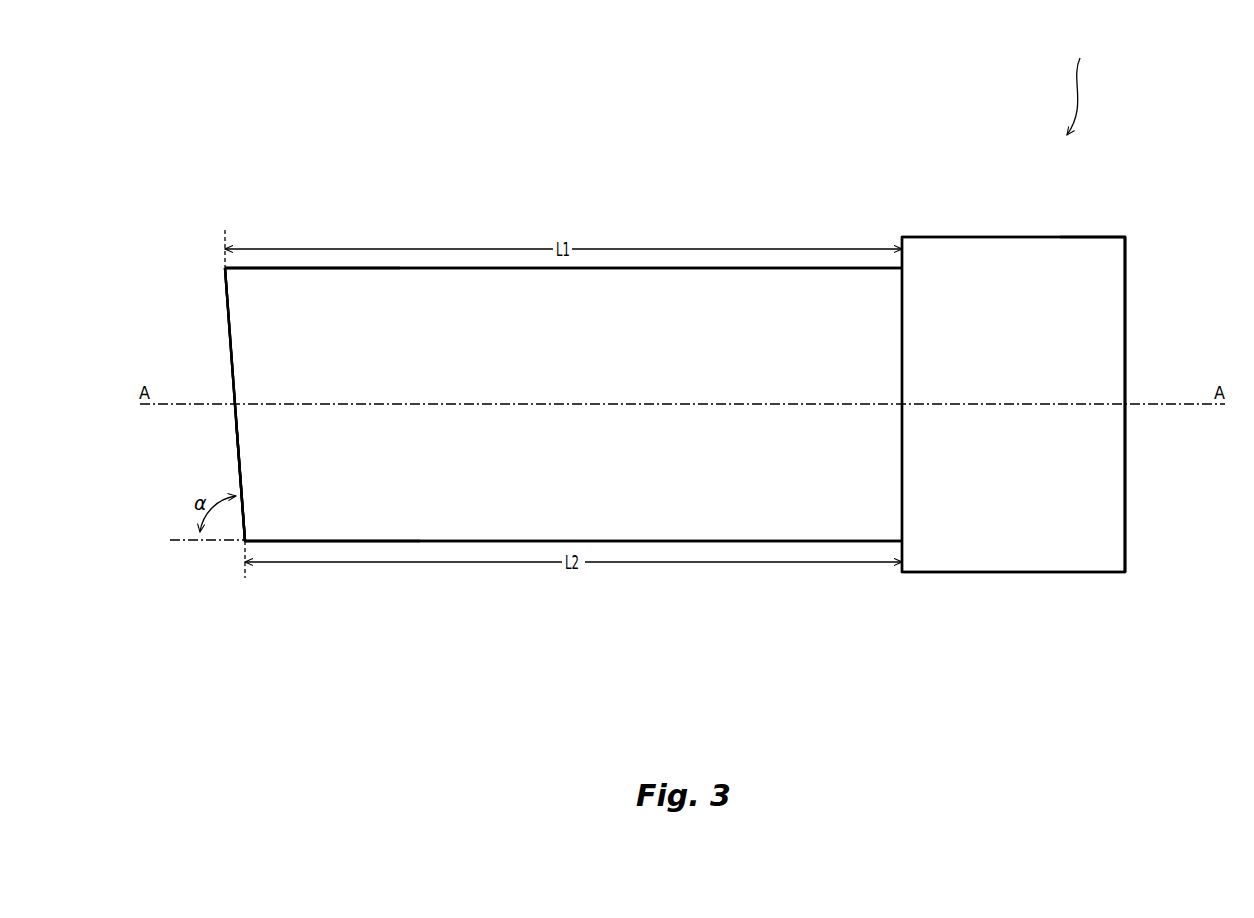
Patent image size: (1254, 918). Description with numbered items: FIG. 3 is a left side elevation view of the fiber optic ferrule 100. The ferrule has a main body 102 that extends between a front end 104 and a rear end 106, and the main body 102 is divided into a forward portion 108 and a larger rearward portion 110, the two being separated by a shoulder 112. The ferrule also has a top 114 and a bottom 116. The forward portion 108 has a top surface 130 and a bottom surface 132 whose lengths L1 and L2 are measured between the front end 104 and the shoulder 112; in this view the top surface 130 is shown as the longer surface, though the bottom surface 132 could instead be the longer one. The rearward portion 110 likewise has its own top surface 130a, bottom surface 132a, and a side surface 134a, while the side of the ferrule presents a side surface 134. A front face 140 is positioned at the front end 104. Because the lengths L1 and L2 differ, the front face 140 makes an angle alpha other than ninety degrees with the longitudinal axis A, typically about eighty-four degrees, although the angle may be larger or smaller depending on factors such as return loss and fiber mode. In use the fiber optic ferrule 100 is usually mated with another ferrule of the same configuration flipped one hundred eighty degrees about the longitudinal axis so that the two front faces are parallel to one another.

The fiber optic ferrule 100 is at (1083, 84).
The main body 102 is at (718, 578).
The front end 104 is at (208, 360).
The rear end 106 is at (1138, 292).
The forward portion 108 is at (203, 302).
The rearward portion 110 is at (1093, 237).
The shoulder 112 is at (970, 514).
The top 114 is at (362, 265).
The bottom 116 is at (363, 542).
The top surface 130 is at (437, 267).
The top surface of rearward portion 130a is at (1022, 237).
The bottom surface 132 is at (484, 542).
The bottom surface of rearward portion 132a is at (1030, 572).
The side surface 134 is at (1110, 520).
The side surface of rearward portion 134a is at (1092, 464).
The front face 140 is at (240, 472).